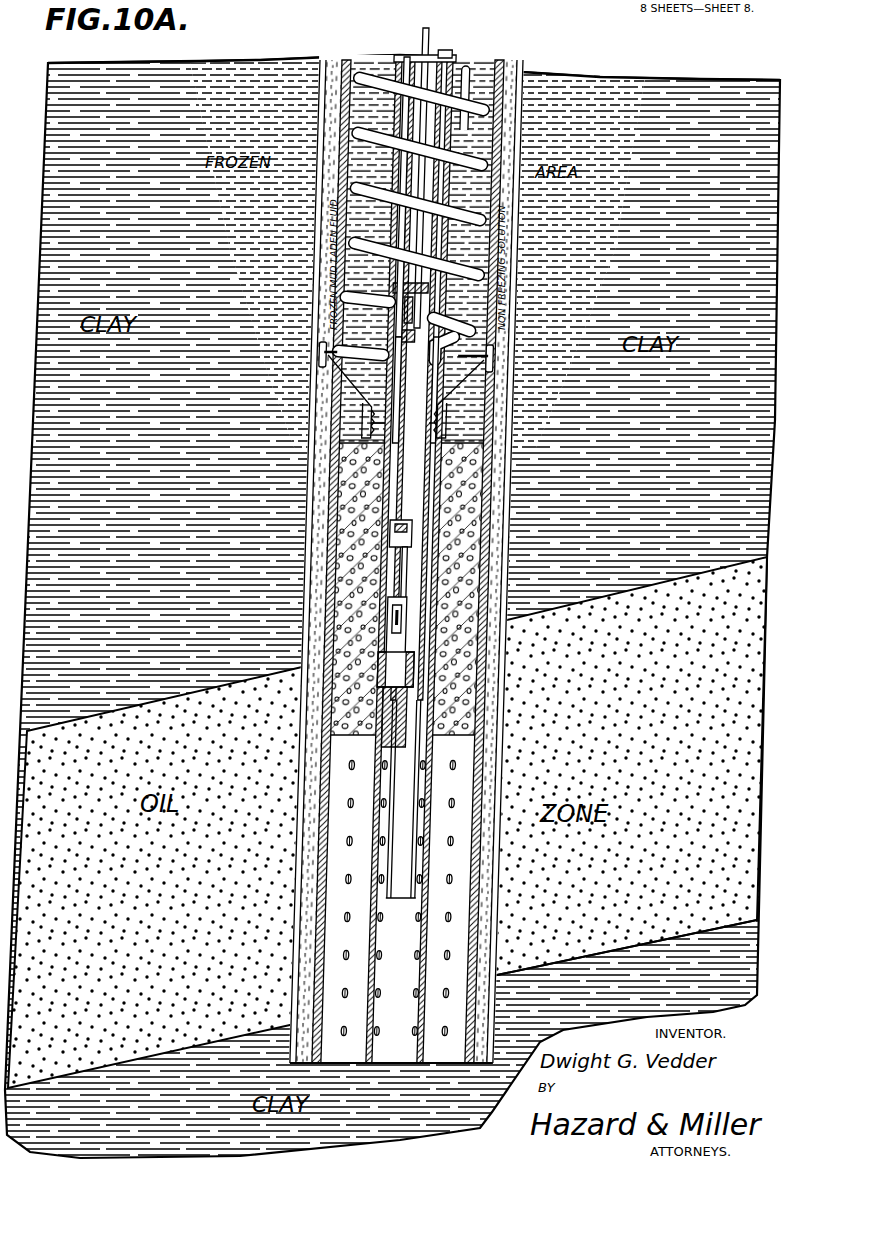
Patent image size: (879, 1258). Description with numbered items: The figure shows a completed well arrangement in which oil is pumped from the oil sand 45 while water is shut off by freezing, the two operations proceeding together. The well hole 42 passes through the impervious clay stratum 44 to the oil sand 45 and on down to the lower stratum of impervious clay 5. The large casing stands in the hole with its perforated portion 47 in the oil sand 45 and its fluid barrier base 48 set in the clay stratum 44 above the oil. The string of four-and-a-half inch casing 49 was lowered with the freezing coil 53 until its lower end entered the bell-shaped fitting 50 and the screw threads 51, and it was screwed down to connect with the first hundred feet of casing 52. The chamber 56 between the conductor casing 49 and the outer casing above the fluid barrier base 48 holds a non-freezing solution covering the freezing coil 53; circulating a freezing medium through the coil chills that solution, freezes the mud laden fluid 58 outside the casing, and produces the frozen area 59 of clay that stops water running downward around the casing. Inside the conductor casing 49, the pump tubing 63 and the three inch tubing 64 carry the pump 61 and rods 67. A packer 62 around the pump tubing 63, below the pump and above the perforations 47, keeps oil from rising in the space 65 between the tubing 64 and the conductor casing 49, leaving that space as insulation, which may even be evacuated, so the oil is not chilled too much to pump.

The stratum of impervious clay 5 is at (735, 968).
The well hole 42 is at (512, 80).
The impervious clay stratum 44 is at (763, 402).
The oil sand 45 is at (740, 877).
The perforated portion 47 is at (333, 1028).
The fluid barrier base 48 is at (487, 578).
The string of 4½ inch casing 49 is at (397, 58).
The bell-shaped fitting 50 is at (332, 380).
The screw threads 51 is at (380, 417).
The first 100 feet of 4½ inch casing 52 is at (438, 637).
The freezing coil 53 is at (450, 55).
The chamber 56 is at (512, 350).
The mud laden fluid 58 is at (327, 62).
The frozen area of the clay 59 is at (613, 187).
The pump 61 is at (420, 553).
The packer 62 is at (383, 712).
The 3 inch pump tubing 63 is at (400, 752).
The 3 inch tubing 64 is at (420, 220).
The space 65 is at (400, 267).
The rods 67 is at (420, 170).